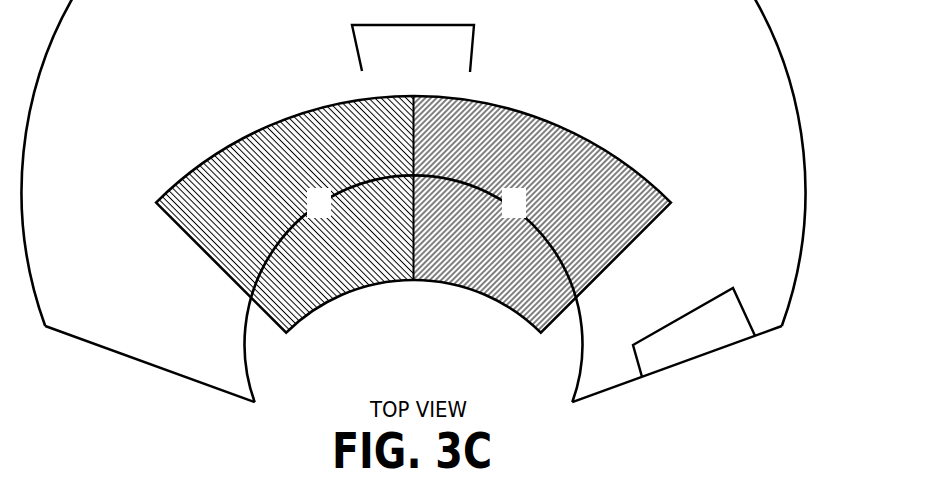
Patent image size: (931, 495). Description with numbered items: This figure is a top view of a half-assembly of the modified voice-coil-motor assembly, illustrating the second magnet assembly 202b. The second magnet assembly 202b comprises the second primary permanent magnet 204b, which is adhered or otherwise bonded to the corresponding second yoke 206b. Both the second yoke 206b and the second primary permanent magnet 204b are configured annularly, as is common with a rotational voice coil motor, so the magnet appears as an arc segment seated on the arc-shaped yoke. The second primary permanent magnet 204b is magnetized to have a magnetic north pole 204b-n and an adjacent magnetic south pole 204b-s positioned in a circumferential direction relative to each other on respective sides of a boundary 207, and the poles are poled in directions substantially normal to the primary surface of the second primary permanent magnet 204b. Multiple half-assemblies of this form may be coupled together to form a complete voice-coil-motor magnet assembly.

The second magnet assembly 202b is at (738, 229).
The second primary permanent magnet 204b is at (358, 202).
The magnetic north pole 204b-n is at (260, 167).
The magnetic south pole 204b-s is at (530, 163).
The second yoke 206b is at (197, 337).
The boundary 207 is at (413, 283).